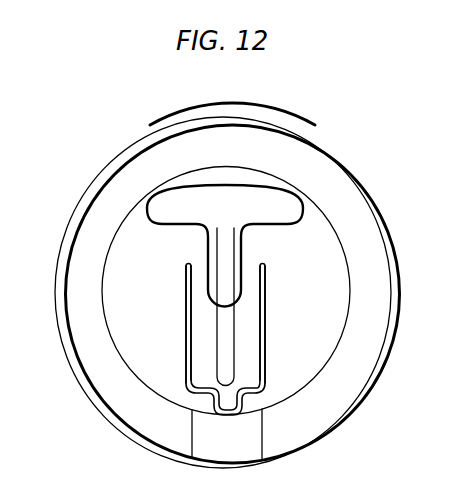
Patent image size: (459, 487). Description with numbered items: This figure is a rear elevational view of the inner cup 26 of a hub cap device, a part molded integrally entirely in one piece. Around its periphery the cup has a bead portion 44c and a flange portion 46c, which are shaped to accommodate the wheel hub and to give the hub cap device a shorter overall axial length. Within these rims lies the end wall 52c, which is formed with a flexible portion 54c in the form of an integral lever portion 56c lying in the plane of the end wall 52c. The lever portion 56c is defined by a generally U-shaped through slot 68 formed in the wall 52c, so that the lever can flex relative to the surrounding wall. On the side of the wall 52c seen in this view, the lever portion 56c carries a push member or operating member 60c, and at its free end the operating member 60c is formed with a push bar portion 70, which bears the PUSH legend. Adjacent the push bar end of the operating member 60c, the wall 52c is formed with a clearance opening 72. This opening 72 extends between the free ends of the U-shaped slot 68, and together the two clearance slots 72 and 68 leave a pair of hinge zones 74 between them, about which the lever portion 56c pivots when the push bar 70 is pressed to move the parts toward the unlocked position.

The inner cup 26 is at (58, 268).
The bead portion 44c is at (115, 163).
The flange portion 46c is at (194, 143).
The end wall 52c is at (322, 258).
The flexible portion 54c is at (146, 304).
The lever portion 56c is at (207, 323).
The operating member 60c is at (230, 347).
The U-shaped through slot 68 is at (263, 372).
The push bar portion 70 is at (272, 198).
The clearance opening 72 is at (226, 252).
The hinge zones 74 is at (196, 284).